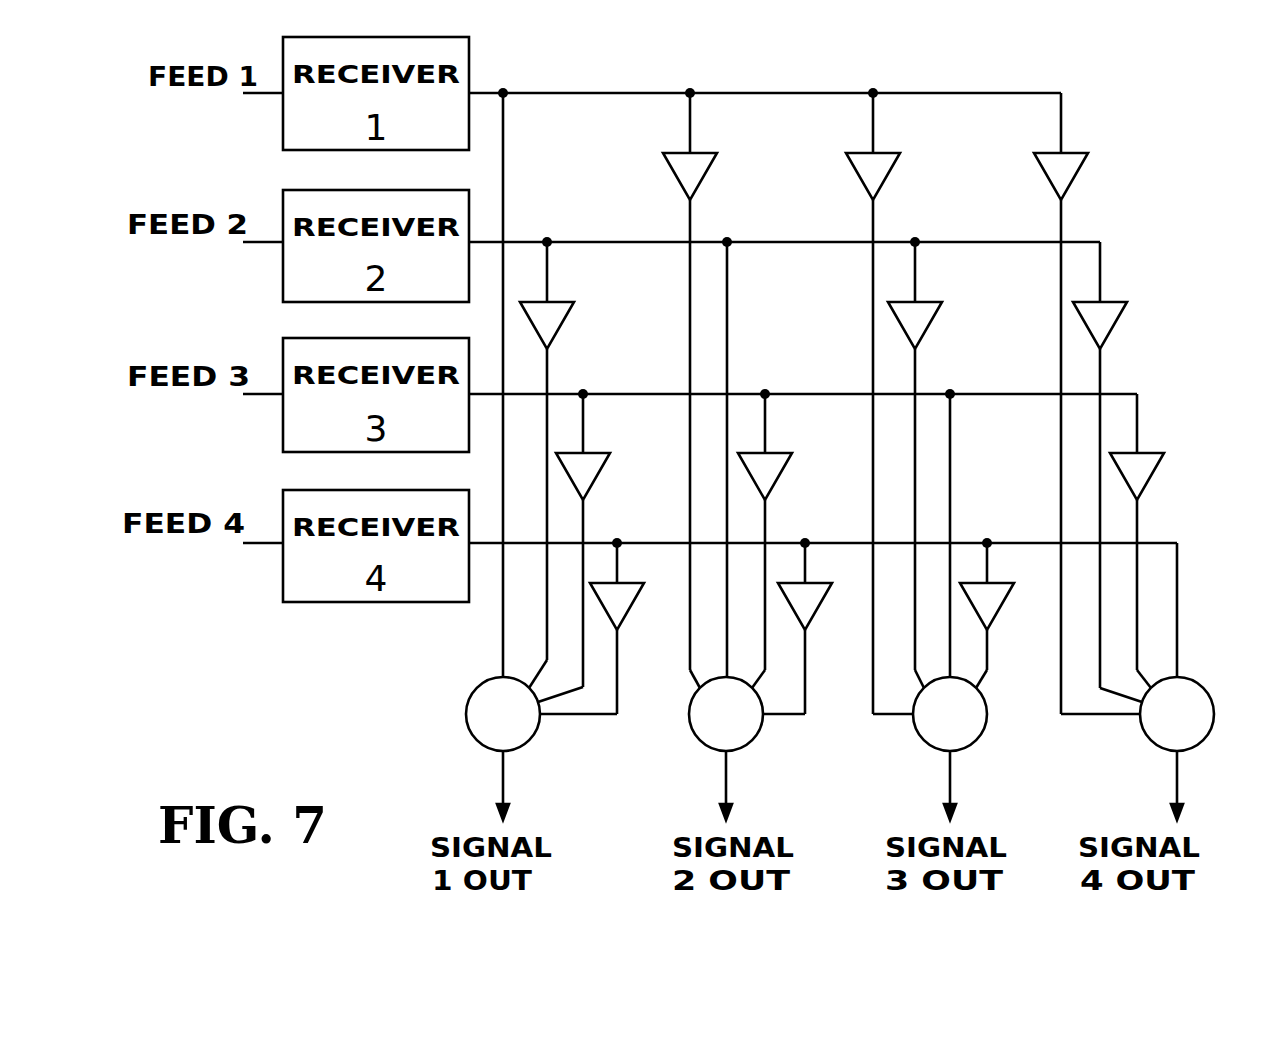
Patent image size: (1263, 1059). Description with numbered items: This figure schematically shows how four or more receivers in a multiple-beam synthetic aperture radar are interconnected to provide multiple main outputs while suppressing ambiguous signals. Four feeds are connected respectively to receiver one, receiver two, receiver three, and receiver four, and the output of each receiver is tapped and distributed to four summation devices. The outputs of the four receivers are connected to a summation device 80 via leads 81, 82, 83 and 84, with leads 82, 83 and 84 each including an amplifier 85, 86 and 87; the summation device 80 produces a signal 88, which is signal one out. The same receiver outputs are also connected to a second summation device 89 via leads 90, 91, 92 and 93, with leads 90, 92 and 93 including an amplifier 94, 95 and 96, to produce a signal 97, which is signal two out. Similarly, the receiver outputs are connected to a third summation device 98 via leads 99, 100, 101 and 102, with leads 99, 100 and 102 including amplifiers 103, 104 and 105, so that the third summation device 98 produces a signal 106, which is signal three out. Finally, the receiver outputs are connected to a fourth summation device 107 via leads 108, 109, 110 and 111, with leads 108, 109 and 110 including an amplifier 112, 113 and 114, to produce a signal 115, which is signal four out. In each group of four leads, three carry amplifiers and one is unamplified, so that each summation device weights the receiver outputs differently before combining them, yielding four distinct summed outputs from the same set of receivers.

The summation device 80 is at (467, 712).
The lead 81 is at (505, 172).
The lead 82 is at (549, 278).
The lead 83 is at (585, 425).
The lead 84 is at (586, 716).
The amplifier 85 is at (560, 322).
The amplifier 86 is at (597, 478).
The amplifier 87 is at (628, 605).
The signal 88 is at (503, 780).
The second summation device 89 is at (748, 746).
The lead 90 is at (688, 130).
The lead 91 is at (729, 335).
The lead 92 is at (767, 430).
The lead 93 is at (785, 716).
The amplifier 94 is at (706, 156).
The amplifier 95 is at (780, 478).
The amplifier 96 is at (815, 603).
The signal 97 is at (726, 780).
The third summation device 98 is at (972, 748).
The lead 99 is at (875, 130).
The lead 100 is at (917, 272).
The lead 101 is at (952, 455).
The lead 102 is at (985, 692).
The amplifier 103 is at (858, 178).
The amplifier 104 is at (932, 325).
The amplifier 105 is at (1000, 605).
The signal 106 is at (948, 776).
The fourth summation device 107 is at (1195, 683).
The lead 108 is at (1063, 122).
The lead 109 is at (1102, 268).
The lead 110 is at (1139, 420).
The lead 111 is at (1179, 592).
The amplifier 112 is at (1047, 178).
The amplifier 113 is at (1112, 330).
The amplifier 114 is at (1150, 478).
The signal 115 is at (1177, 775).